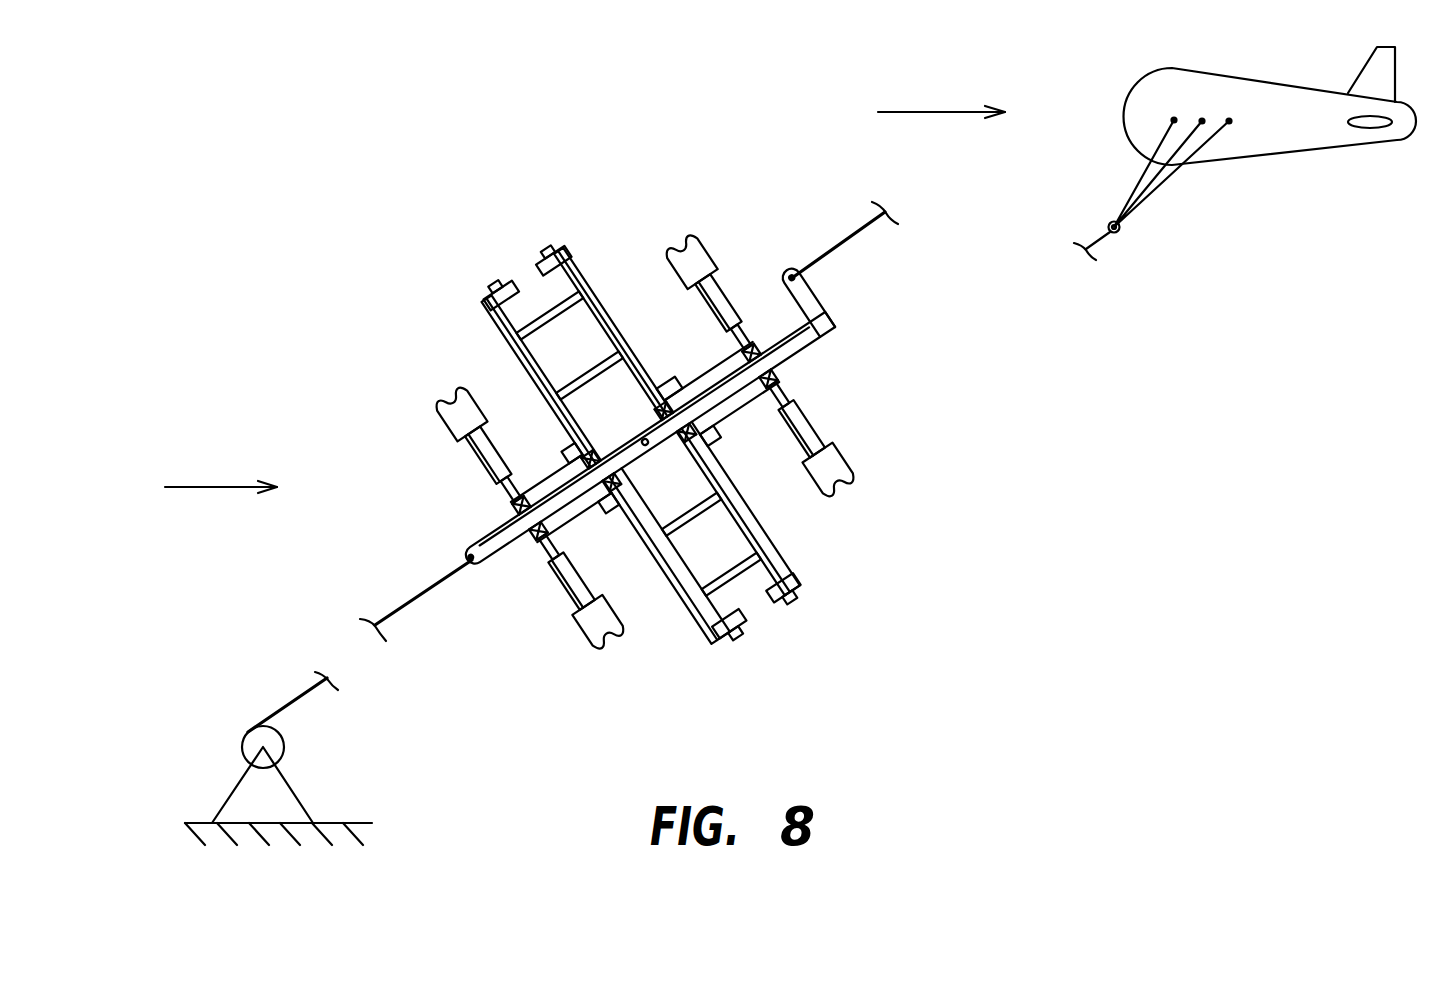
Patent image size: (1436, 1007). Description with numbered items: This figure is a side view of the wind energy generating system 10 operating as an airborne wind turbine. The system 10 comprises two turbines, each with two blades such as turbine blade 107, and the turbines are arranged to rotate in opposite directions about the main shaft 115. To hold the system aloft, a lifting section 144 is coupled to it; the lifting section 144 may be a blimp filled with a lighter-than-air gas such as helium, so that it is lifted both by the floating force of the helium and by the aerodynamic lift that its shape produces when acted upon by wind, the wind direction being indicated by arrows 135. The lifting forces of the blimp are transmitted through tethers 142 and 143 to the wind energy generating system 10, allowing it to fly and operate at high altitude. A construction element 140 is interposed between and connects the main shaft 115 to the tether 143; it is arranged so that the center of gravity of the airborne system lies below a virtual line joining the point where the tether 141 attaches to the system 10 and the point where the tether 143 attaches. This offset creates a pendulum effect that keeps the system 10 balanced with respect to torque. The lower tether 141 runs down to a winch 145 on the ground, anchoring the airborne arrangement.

The wind energy generating system 10 is at (670, 401).
The turbine blade 107 is at (440, 407).
The main shaft 115 is at (795, 360).
The airflow direction 135 is at (233, 485).
The construction element 140 is at (822, 308).
The tether 141 is at (293, 707).
The tether 142 is at (1163, 188).
The tether 143 is at (847, 238).
The lifting section 144 is at (1308, 152).
The winch 145 is at (247, 730).